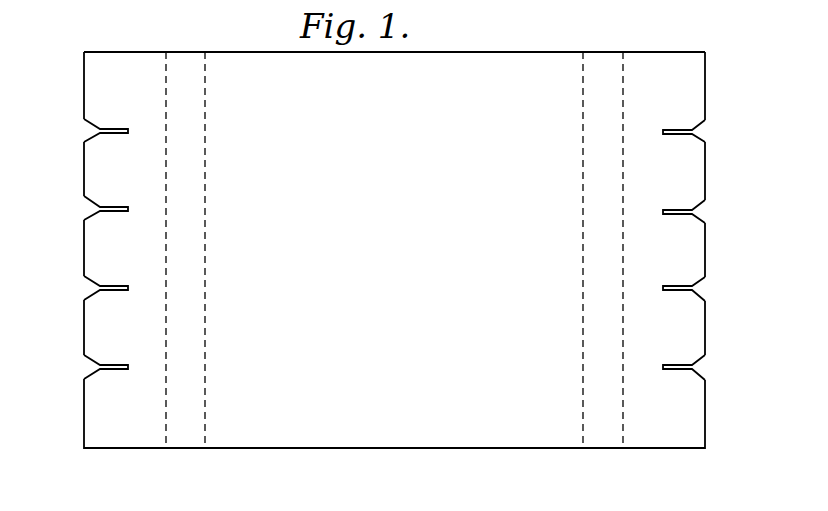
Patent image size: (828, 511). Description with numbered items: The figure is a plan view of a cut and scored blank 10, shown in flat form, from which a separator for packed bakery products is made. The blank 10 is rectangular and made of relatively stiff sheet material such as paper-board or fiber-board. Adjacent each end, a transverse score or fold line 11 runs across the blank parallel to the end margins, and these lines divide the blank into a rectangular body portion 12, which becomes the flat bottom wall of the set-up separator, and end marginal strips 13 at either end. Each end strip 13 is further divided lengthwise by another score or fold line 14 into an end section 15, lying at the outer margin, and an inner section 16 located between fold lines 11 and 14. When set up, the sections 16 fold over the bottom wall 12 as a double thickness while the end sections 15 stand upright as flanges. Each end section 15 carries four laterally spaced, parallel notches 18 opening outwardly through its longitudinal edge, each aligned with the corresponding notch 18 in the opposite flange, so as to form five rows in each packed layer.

The blank 10 is at (383, 252).
The score or fold line 11 is at (207, 157).
The body portion 12 is at (442, 68).
The end marginal strip 13 is at (123, 50).
The score or fold line 14 is at (166, 97).
The end section 15 is at (128, 440).
The section 16 is at (188, 428).
The notch 18 is at (99, 130).